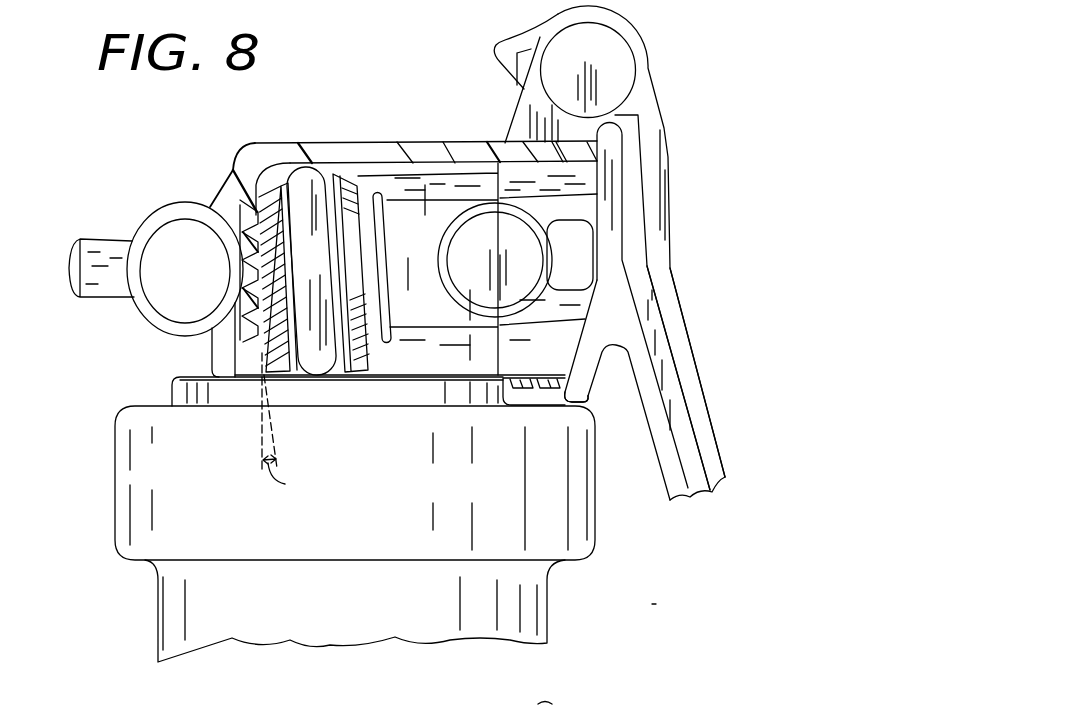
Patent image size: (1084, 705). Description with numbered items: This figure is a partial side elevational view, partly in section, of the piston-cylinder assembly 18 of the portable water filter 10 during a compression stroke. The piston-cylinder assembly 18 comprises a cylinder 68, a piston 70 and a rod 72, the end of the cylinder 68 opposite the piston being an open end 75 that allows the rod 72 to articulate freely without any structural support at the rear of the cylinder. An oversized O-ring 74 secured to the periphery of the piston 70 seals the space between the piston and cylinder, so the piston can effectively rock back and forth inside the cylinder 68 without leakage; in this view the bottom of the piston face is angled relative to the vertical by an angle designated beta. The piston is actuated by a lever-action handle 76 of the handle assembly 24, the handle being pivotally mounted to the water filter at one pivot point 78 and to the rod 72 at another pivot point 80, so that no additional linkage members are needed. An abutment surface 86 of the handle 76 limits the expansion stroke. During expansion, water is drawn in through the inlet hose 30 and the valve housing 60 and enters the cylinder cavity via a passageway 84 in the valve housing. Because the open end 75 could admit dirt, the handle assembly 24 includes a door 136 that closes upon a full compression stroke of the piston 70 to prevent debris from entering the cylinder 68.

The portable water filter 10 is at (751, 42).
The piston-cylinder assembly 18 is at (387, 138).
The handle assembly 24 is at (736, 198).
The inlet hose 30 is at (101, 246).
The valve housing 60 is at (164, 216).
The cylinder 68 is at (372, 167).
The piston 70 is at (258, 212).
The rod 72 is at (420, 239).
The O-ring 74 is at (300, 180).
The open end 75 is at (546, 380).
The lever-action handle 76 is at (685, 360).
The pivot point 78 is at (596, 58).
The pivot point 80 is at (512, 245).
The passageway 84 is at (237, 276).
The abutment surface 86 is at (518, 84).
The door 136 is at (580, 386).